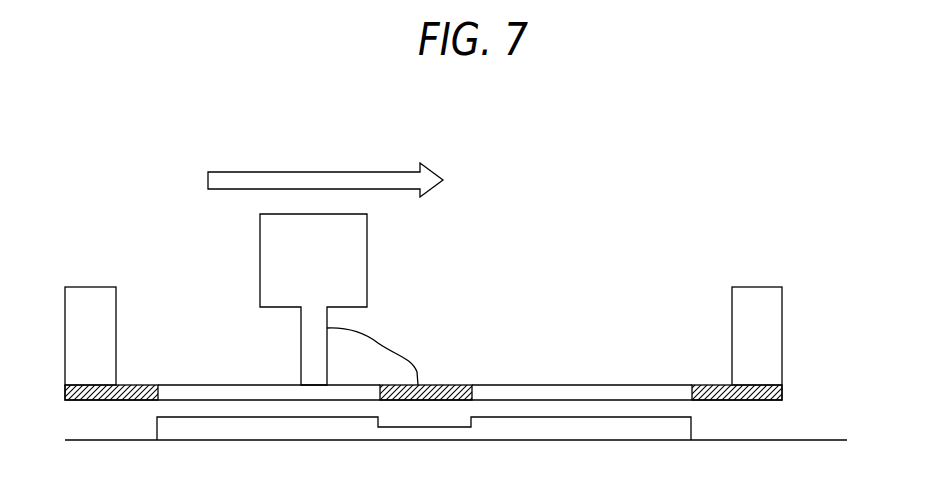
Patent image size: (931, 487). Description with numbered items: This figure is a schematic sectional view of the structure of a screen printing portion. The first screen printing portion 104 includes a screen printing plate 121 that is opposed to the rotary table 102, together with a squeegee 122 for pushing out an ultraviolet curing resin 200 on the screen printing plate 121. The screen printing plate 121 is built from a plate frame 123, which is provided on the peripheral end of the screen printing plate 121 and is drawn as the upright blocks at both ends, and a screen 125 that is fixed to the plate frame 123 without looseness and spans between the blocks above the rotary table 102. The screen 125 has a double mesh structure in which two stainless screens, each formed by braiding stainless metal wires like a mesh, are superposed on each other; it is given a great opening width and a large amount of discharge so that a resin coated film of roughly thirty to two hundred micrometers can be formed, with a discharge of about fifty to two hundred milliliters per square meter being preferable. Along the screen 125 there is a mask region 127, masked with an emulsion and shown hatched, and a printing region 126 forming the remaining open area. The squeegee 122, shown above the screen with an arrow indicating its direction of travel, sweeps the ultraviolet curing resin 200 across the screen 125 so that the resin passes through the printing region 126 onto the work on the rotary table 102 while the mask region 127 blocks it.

The rotary table 102 is at (786, 448).
The first screen printing portion 104 is at (648, 217).
The screen printing plate 121 is at (475, 297).
The squeegee 122 is at (362, 240).
The plate frame 123 is at (100, 296).
The screen 125 is at (583, 386).
The printing region 126 is at (205, 385).
The mask region 127 is at (131, 385).
The ultraviolet curing resin 200 is at (357, 338).